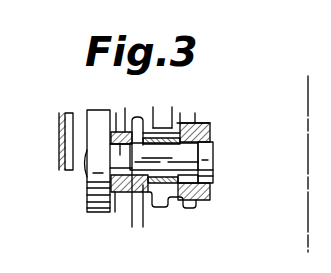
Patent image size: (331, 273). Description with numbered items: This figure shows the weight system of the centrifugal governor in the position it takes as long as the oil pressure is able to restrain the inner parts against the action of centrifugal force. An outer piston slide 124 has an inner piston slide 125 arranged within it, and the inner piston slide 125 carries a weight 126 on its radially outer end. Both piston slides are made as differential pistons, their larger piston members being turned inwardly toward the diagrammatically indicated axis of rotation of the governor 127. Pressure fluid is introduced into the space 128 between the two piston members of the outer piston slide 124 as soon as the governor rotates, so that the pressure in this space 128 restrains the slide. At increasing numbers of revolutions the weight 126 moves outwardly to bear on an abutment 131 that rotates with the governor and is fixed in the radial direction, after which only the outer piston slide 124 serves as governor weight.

The outer piston slide 124 is at (211, 128).
The inner piston slide 125 is at (160, 156).
The weight 126 is at (91, 212).
The axis of rotation of the governor 127 is at (308, 233).
The space 128 is at (167, 134).
The abutment 131 is at (65, 138).